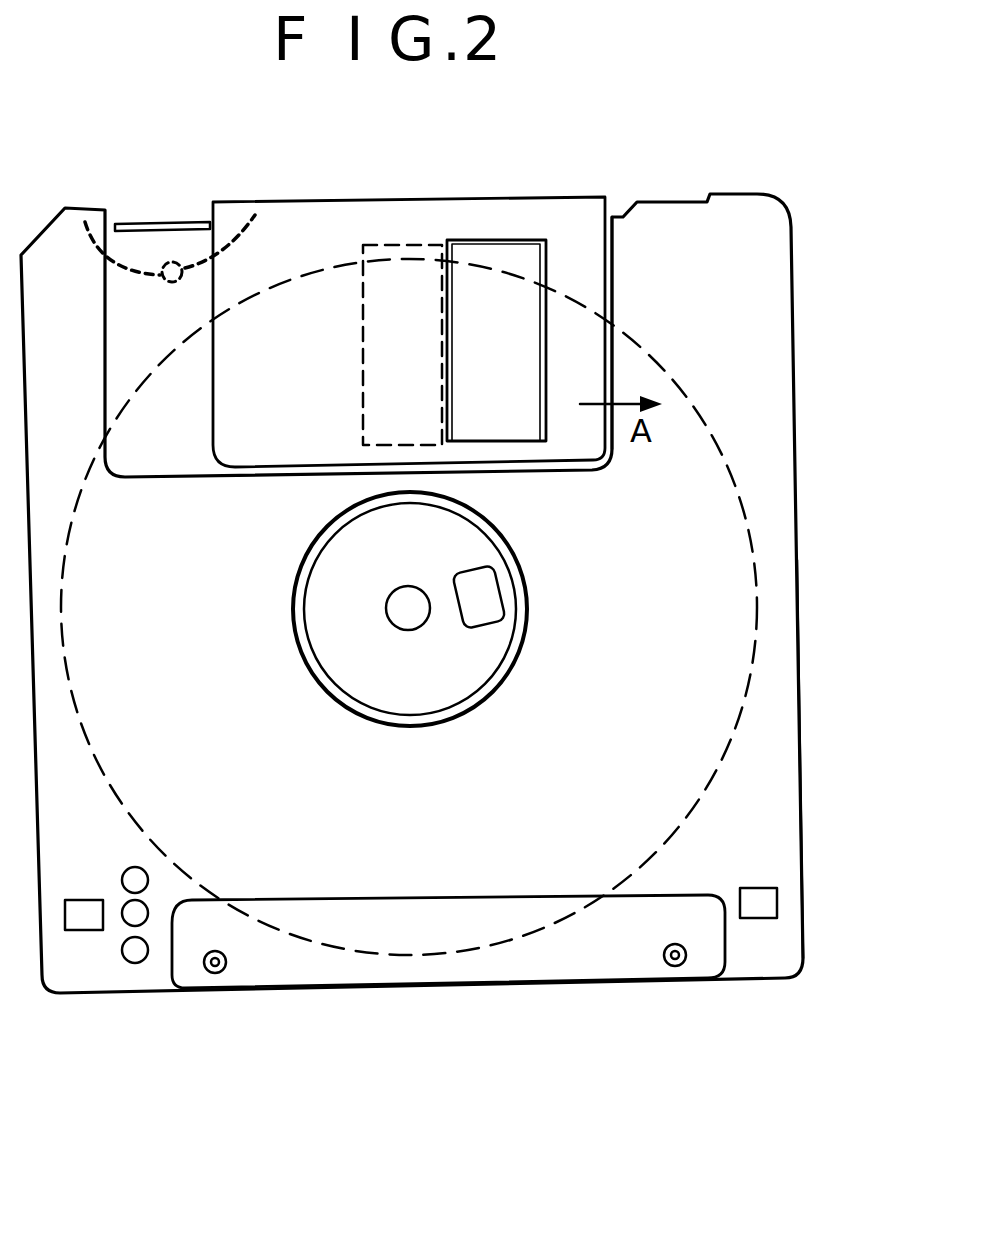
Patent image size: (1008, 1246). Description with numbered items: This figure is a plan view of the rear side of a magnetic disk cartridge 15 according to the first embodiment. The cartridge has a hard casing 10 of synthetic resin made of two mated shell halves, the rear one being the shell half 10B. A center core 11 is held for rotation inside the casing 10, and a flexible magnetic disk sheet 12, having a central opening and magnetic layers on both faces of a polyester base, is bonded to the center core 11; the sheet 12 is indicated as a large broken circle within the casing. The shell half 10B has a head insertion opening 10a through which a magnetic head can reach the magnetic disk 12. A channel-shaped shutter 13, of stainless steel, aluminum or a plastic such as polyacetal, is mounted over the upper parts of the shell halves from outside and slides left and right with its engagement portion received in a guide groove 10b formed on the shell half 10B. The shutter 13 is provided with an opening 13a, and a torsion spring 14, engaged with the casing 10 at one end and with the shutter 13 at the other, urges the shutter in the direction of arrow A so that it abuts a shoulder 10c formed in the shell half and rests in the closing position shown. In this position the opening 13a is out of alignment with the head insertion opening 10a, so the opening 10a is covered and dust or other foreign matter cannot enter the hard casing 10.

The hard casing 10 is at (800, 402).
The shell half 10B is at (770, 737).
The head insertion opening 10a is at (387, 268).
The guide groove 10b is at (160, 222).
The shoulder 10c is at (605, 243).
The center core 11 is at (435, 690).
The magnetic disk sheet 12 is at (755, 556).
The shutter 13 is at (423, 199).
The opening 13a is at (540, 304).
The torsion spring 14 is at (118, 264).
The magnetic disk cartridge 15 is at (469, 995).